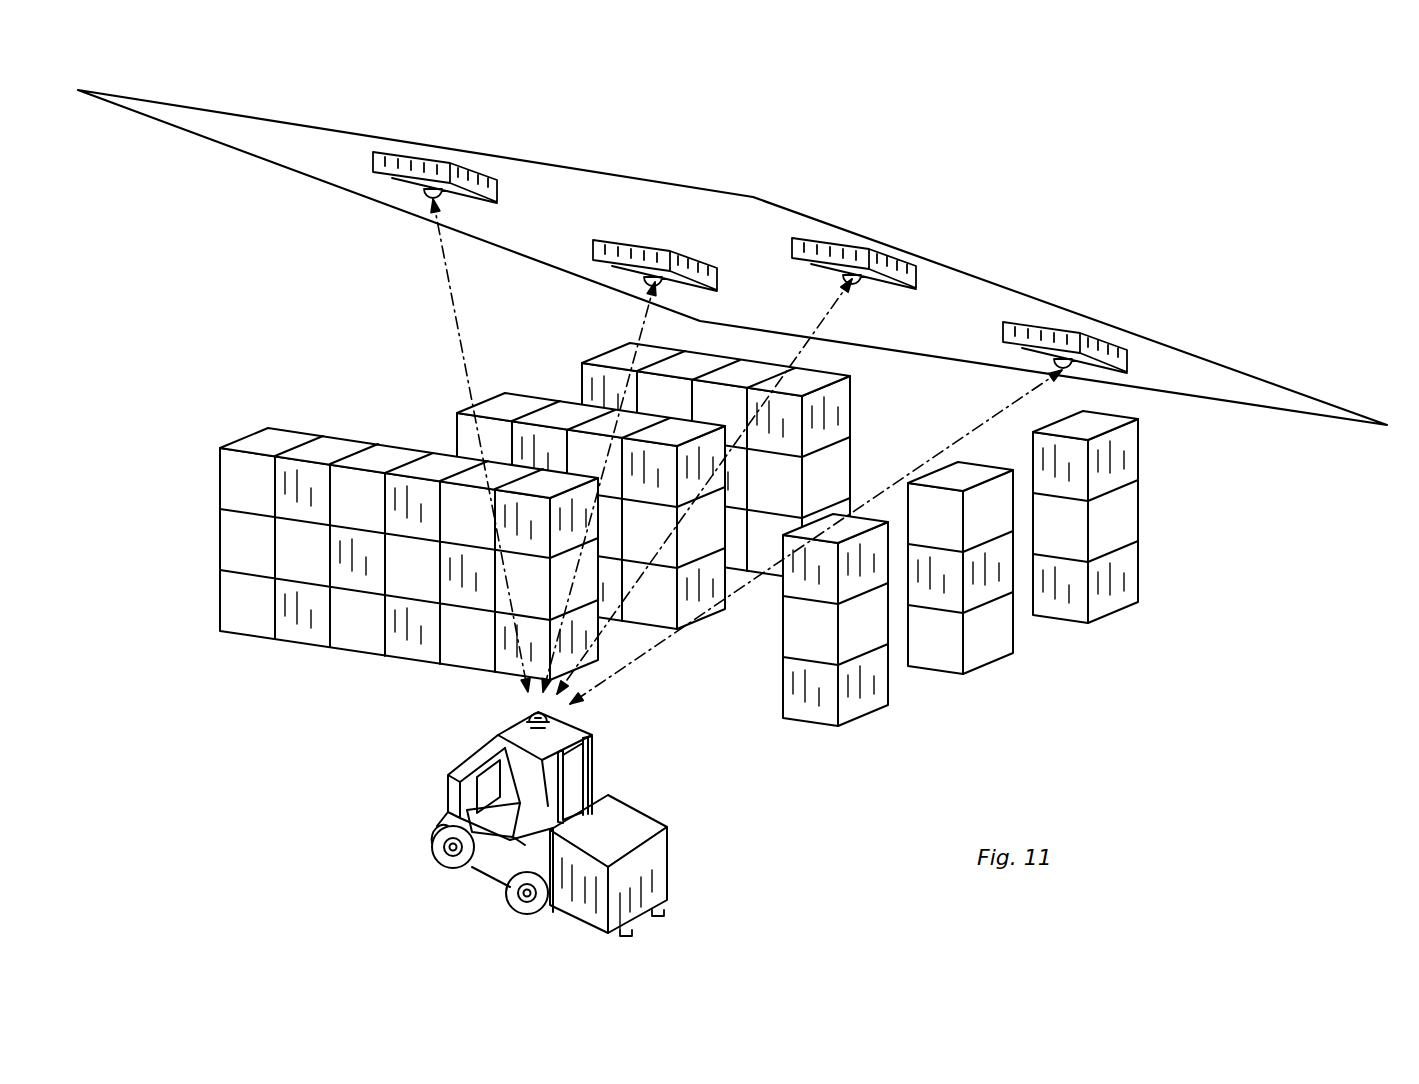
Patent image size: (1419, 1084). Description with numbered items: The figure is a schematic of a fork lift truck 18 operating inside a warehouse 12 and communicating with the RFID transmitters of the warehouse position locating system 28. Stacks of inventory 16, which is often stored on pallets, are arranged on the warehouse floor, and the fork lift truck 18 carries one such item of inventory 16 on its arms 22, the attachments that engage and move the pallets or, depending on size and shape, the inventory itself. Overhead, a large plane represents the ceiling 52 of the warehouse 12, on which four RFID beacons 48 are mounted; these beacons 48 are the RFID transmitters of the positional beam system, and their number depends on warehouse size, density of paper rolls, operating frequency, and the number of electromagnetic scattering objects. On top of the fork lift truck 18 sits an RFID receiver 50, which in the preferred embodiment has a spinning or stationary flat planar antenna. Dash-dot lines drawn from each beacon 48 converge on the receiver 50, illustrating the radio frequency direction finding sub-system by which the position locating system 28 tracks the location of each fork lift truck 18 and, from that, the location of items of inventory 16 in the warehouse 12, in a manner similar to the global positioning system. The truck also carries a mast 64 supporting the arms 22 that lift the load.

The warehouse 12 is at (220, 710).
The inventory 16 is at (228, 540).
The fork lift truck 18 is at (513, 805).
The arms 22 is at (662, 913).
The warehouse position locating system 28 is at (1047, 228).
The RFID beacons 48 is at (500, 192).
The RFID receiver 50 is at (528, 719).
The ceiling 52 is at (291, 152).
The forklift mast 64 is at (597, 773).